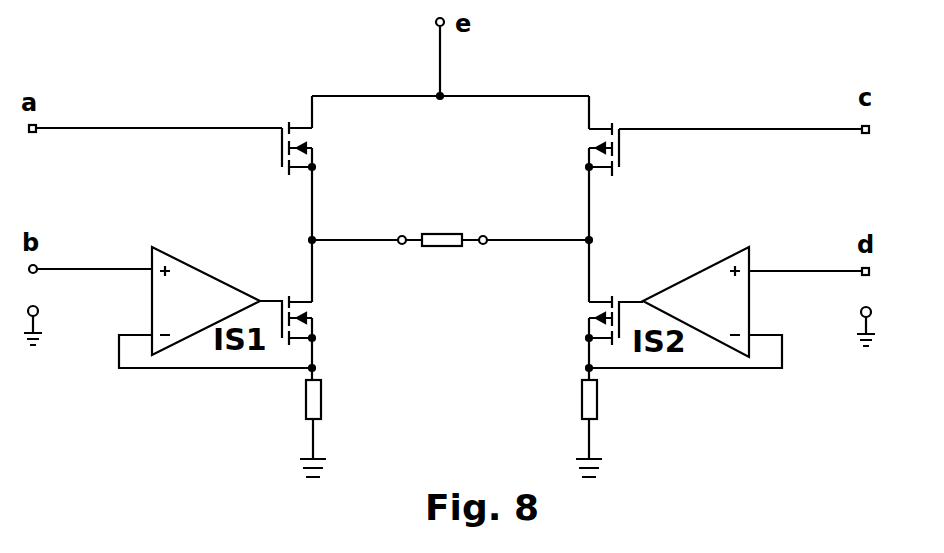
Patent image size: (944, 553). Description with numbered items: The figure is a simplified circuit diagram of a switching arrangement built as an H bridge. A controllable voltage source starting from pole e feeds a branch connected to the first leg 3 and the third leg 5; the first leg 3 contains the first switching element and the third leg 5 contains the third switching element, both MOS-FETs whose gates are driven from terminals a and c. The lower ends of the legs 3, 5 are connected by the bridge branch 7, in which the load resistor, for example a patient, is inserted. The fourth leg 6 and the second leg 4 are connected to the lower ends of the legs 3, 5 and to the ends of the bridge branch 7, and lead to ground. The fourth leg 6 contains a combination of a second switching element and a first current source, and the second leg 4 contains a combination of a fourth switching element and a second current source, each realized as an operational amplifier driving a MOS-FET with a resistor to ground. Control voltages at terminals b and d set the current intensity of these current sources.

The first leg 3 is at (311, 118).
The third leg 5 is at (590, 112).
The fourth leg 6 is at (312, 275).
The second leg 4 is at (589, 278).
The bridge branch 7 is at (565, 238).